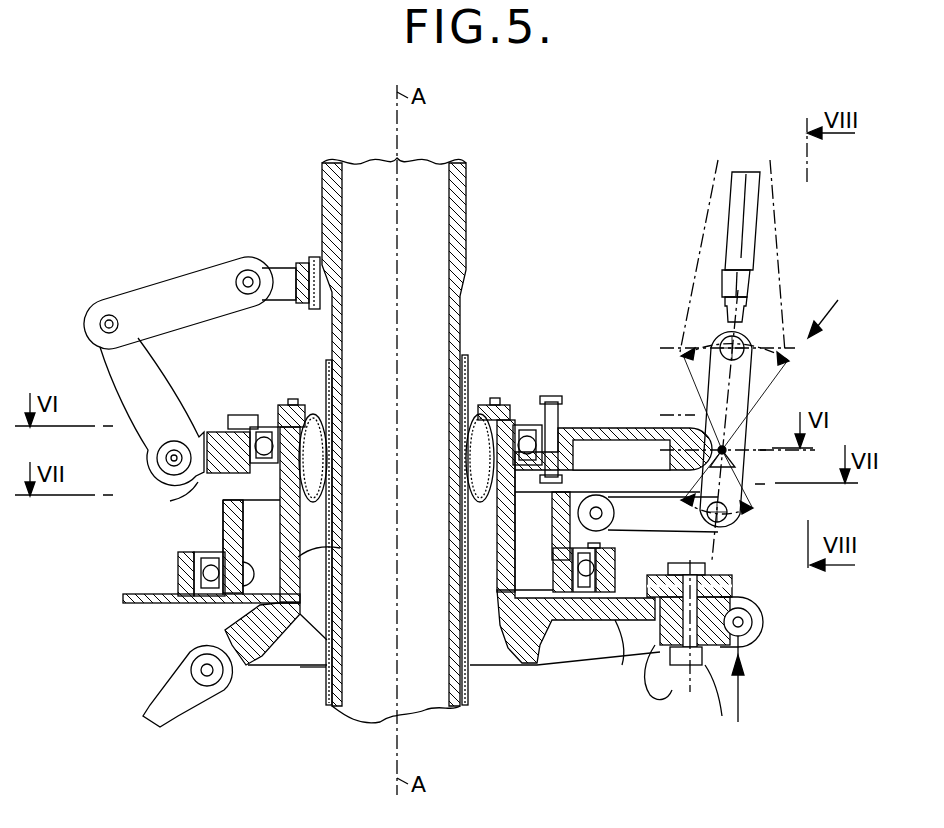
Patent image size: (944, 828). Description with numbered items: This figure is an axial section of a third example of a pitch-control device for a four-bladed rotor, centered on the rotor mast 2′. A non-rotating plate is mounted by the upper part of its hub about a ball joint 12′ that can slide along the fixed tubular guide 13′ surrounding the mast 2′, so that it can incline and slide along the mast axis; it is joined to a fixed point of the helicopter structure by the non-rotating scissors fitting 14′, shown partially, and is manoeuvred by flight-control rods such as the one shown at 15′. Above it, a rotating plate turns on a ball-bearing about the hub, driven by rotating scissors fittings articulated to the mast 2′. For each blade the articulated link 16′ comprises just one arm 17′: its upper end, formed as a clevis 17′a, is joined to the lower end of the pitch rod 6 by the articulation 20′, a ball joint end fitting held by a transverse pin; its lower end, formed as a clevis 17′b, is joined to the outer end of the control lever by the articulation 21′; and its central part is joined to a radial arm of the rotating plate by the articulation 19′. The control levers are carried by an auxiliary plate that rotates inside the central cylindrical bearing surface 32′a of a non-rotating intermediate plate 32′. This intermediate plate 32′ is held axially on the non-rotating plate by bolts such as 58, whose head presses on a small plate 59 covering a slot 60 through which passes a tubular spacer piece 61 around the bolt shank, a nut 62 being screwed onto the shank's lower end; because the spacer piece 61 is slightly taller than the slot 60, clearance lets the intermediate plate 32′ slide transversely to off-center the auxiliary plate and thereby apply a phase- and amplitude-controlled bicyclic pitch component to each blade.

The rotor mast 2′ is at (394, 458).
The pitch rod 6 is at (733, 212).
The ball joint 12′ is at (396, 458).
The fixed tubular guide 13′ is at (300, 690).
The non-rotating scissors fitting 14′ is at (165, 686).
The flight-control rod 15′ is at (772, 679).
The articulated link 16′ is at (835, 307).
The arm 17′ is at (704, 425).
The clevis 17′a is at (716, 322).
The clevis 17′b is at (753, 502).
The articulation 19′ is at (737, 438).
The articulation 20′ is at (734, 320).
The articulation 21′ is at (749, 537).
The intermediate plate 32′ is at (197, 620).
The central cylindrical bearing surface 32′a is at (162, 570).
The bolt 58 is at (690, 692).
The small plate 59 is at (732, 579).
The slot 60 is at (735, 598).
The tubular spacer piece 61 is at (748, 626).
The nut 62 is at (670, 682).